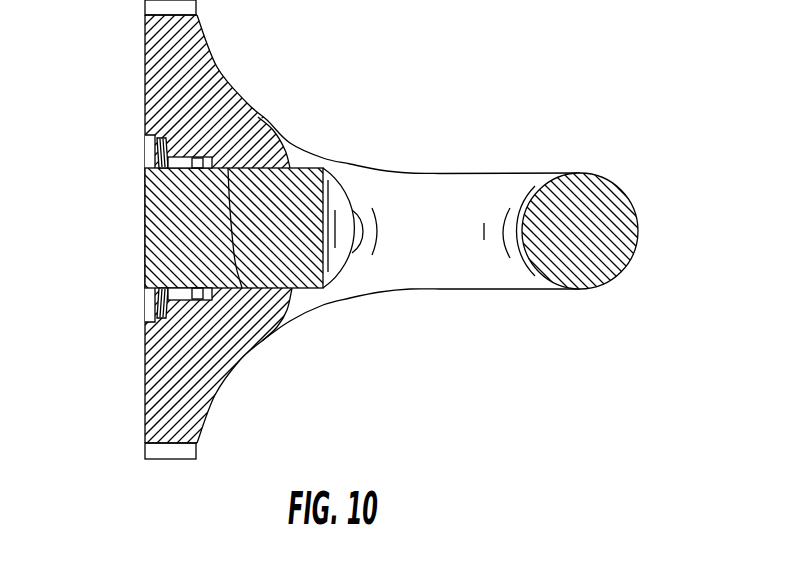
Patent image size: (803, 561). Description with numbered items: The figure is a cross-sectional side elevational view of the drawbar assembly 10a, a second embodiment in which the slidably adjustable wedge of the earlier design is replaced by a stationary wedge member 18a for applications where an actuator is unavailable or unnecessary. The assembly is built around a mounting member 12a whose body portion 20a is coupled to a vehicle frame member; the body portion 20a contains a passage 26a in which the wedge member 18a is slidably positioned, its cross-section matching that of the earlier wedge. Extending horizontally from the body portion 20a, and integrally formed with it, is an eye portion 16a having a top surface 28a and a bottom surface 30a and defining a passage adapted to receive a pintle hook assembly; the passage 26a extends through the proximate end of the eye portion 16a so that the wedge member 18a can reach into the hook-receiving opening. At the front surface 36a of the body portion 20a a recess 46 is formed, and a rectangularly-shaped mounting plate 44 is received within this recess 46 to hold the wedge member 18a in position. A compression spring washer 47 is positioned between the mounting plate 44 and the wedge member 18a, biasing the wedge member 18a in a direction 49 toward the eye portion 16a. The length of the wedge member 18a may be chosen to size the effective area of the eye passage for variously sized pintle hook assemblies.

The drawbar assembly 10a is at (385, 96).
The mounting member 12a is at (132, 100).
The eye portion 16a is at (637, 222).
The stationary wedge member 18a is at (256, 168).
The body portion 20a is at (145, 65).
The passage 26a is at (242, 288).
The top surface 28a is at (490, 173).
The bottom surface 30a is at (457, 289).
The front surface 36a is at (145, 371).
The mounting plate 44 is at (157, 152).
The recess 46 is at (157, 317).
The compression spring washer 47 is at (166, 167).
The direction 49 is at (113, 505).